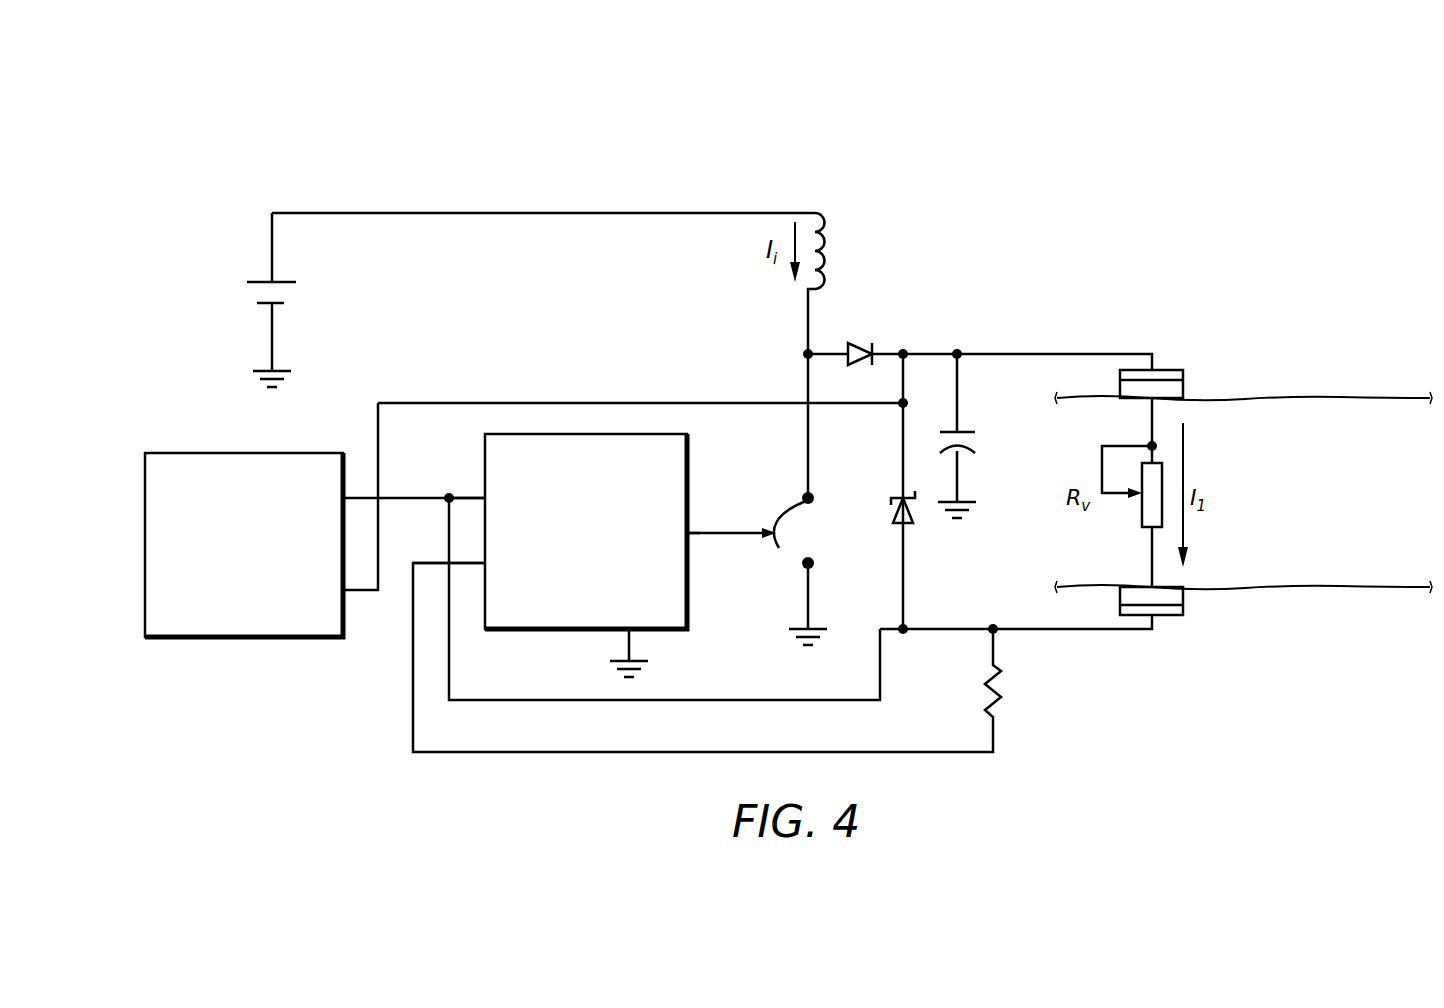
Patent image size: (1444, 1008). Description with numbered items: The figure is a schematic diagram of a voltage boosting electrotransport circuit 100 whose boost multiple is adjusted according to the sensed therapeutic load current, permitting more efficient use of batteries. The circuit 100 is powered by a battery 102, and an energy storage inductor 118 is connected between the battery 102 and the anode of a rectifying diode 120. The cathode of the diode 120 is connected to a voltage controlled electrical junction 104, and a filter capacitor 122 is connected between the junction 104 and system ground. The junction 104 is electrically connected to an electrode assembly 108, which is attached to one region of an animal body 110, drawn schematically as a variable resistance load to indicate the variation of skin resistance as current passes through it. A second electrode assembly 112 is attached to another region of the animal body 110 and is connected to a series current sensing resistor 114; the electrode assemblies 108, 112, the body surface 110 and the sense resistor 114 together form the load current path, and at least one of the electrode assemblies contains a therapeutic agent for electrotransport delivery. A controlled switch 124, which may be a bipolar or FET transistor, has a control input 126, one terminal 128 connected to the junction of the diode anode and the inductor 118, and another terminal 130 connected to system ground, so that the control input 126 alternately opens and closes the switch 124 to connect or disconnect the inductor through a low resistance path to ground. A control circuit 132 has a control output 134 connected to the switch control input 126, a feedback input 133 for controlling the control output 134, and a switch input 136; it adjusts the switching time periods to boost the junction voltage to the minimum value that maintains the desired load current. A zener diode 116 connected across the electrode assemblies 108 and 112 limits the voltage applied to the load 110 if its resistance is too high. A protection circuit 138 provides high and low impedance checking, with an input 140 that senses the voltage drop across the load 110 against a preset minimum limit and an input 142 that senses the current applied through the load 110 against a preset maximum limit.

The voltage boosting electrotransport circuit 100 is at (618, 183).
The battery 102 is at (262, 280).
The voltage controlled electrical junction 104 is at (958, 358).
The electrode assembly 108 is at (1183, 370).
The animal body 110 is at (1288, 397).
The electrode assembly 112 is at (1183, 615).
The series current sensing resistor 114 is at (1003, 689).
The zener diode 116 is at (916, 522).
The energy storage inductor 118 is at (830, 240).
The rectifying diode 120 is at (852, 344).
The filter capacitor 122 is at (977, 431).
The controlled switch 124 is at (803, 528).
The control input 126 is at (733, 537).
The terminal 128 is at (802, 496).
The terminal 130 is at (804, 566).
The control circuit 132 is at (553, 632).
The feedback input 133 is at (485, 500).
The control output 134 is at (672, 537).
The switch input 136 is at (467, 567).
The protection circuit 138 is at (243, 640).
The input 140 is at (363, 496).
The input 142 is at (345, 595).